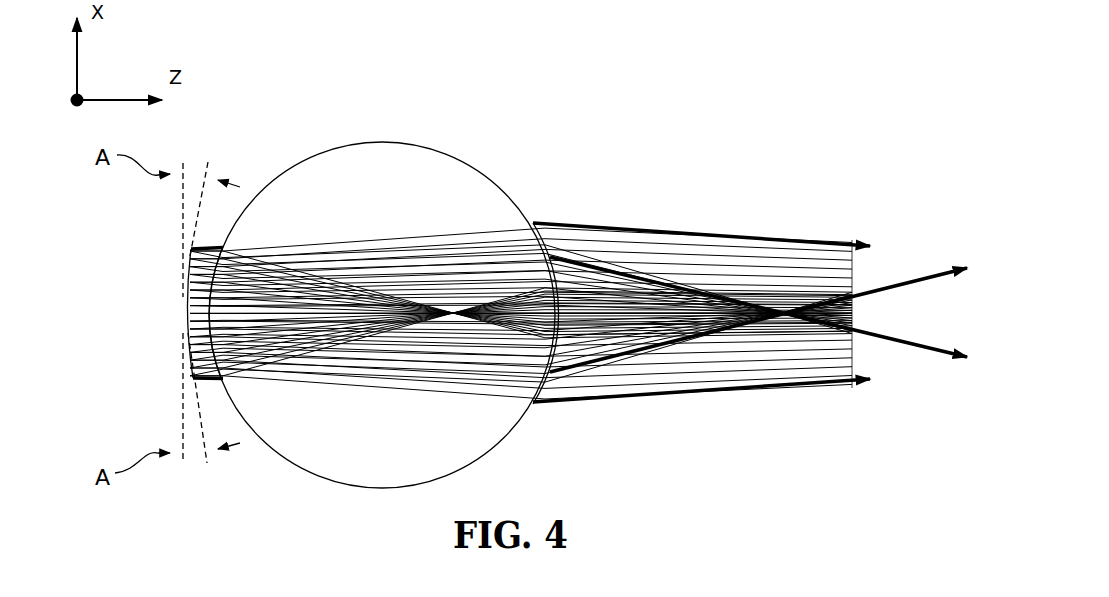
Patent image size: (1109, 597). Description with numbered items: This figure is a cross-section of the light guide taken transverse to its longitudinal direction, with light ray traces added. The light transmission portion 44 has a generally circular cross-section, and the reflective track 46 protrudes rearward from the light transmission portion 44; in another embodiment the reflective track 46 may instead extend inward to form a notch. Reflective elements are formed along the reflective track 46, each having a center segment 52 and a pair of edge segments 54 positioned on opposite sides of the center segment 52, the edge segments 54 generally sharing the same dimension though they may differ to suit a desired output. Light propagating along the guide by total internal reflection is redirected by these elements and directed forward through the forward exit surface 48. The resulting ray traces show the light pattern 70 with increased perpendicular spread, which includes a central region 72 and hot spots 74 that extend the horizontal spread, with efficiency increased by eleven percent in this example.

The light transmission portion 44 is at (470, 162).
The reflective track 46 is at (212, 247).
The forward exit surface 48 is at (547, 240).
The center segment 52 is at (188, 307).
The edge segments 54 is at (190, 263).
The light pattern 70 is at (773, 238).
The central region 72 is at (850, 313).
The hot spots 74 is at (863, 240).